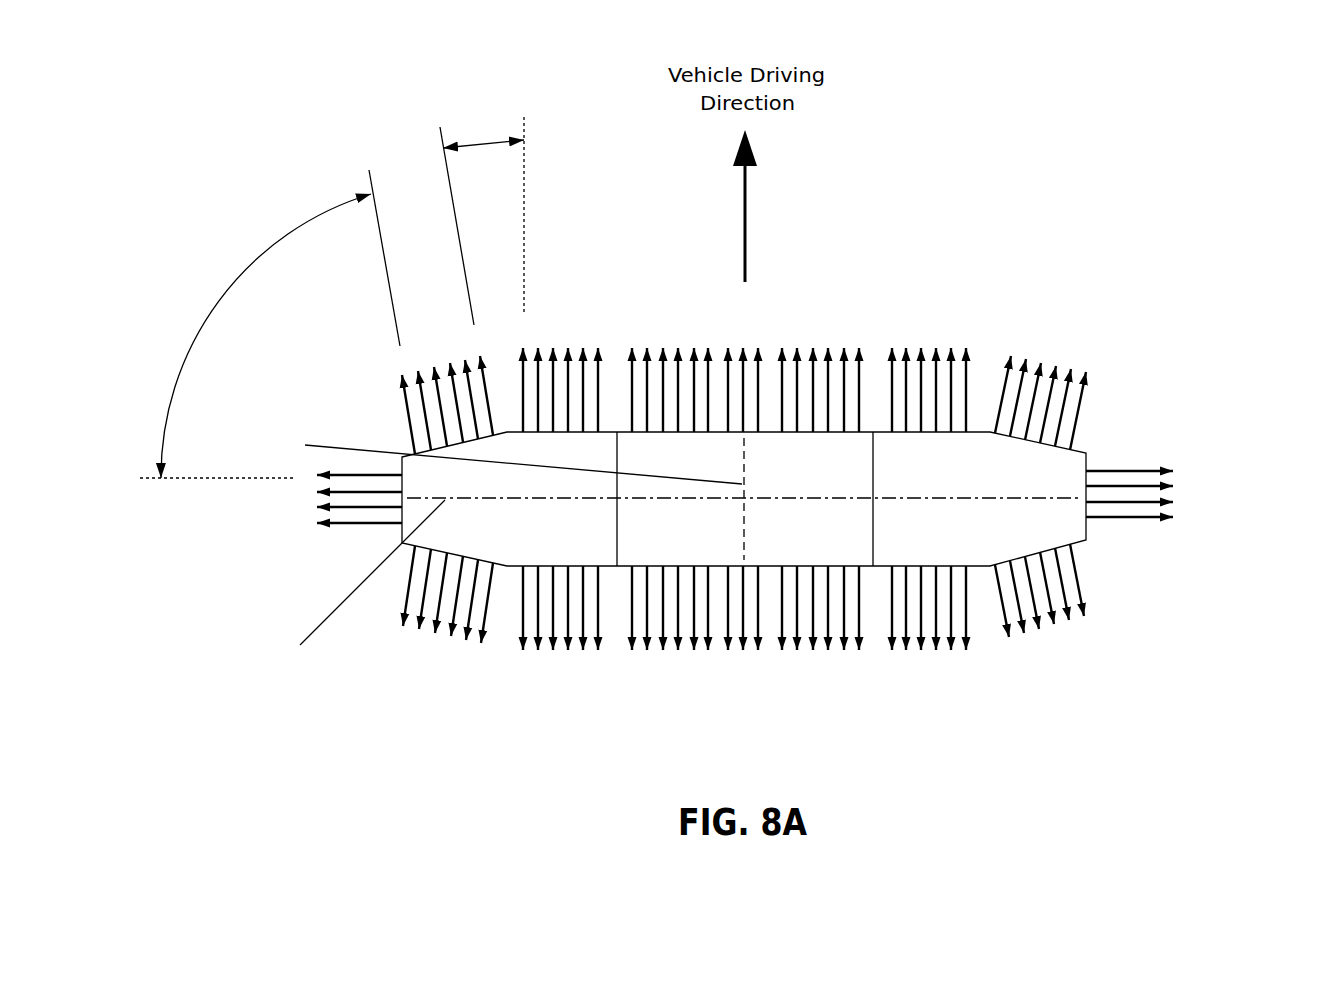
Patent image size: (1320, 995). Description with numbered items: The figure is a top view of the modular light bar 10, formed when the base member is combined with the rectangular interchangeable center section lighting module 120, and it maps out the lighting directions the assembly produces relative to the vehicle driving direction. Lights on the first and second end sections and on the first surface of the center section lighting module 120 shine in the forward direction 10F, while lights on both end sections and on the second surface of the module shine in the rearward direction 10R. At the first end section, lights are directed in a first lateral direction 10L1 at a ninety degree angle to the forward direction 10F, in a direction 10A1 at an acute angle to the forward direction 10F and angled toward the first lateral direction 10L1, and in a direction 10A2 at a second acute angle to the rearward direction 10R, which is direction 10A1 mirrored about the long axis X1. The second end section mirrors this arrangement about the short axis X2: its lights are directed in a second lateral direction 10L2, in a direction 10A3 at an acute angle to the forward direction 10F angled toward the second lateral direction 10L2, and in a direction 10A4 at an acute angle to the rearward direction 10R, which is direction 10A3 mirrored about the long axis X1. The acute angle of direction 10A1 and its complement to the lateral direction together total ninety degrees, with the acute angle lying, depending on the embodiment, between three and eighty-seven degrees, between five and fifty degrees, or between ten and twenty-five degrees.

The modular light bar 10 is at (850, 464).
The interchangeable center section lighting module 120 is at (874, 517).
The forward direction 10F is at (630, 381).
The rearward direction 10R is at (628, 618).
The first acute-angle direction 10A1 is at (402, 418).
The second acute-angle direction 10A2 is at (402, 588).
The third acute-angle direction 10A3 is at (1088, 415).
The fourth acute-angle direction 10A4 is at (1093, 590).
The first lateral direction 10L1 is at (360, 530).
The second lateral direction 10L2 is at (1138, 527).
The long axis X1 is at (350, 585).
The short axis X2 is at (506, 459).